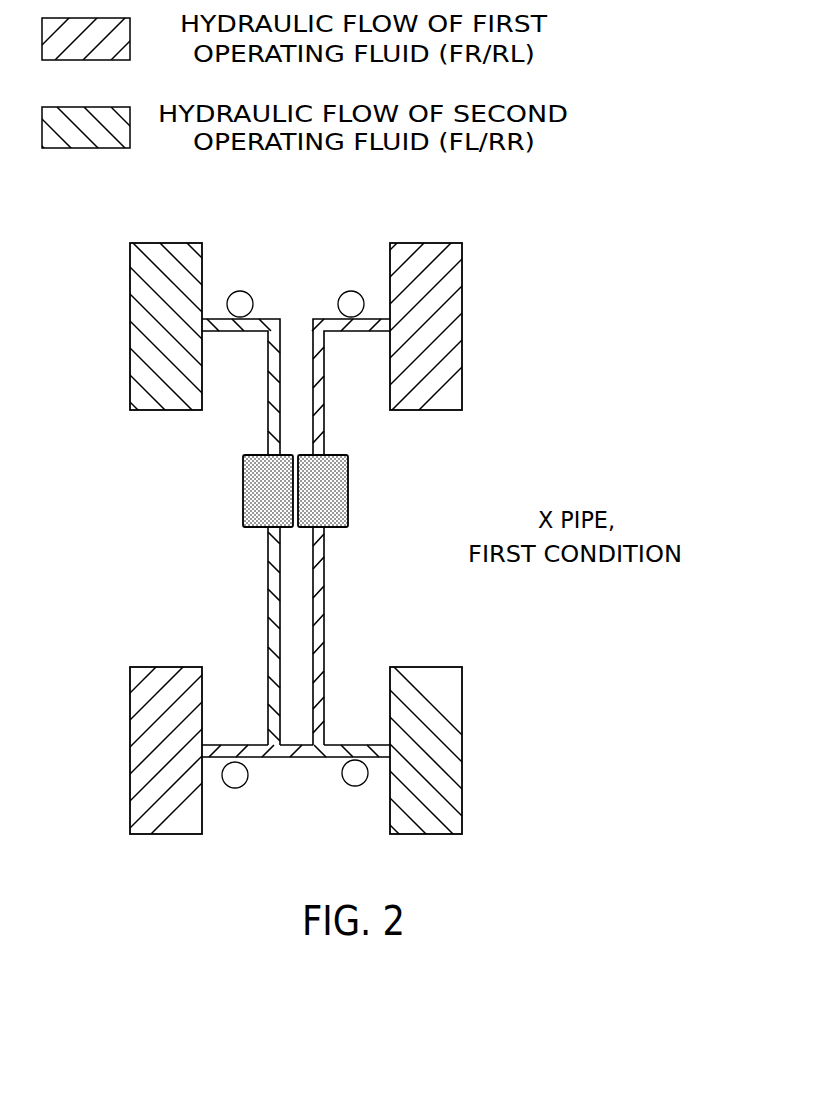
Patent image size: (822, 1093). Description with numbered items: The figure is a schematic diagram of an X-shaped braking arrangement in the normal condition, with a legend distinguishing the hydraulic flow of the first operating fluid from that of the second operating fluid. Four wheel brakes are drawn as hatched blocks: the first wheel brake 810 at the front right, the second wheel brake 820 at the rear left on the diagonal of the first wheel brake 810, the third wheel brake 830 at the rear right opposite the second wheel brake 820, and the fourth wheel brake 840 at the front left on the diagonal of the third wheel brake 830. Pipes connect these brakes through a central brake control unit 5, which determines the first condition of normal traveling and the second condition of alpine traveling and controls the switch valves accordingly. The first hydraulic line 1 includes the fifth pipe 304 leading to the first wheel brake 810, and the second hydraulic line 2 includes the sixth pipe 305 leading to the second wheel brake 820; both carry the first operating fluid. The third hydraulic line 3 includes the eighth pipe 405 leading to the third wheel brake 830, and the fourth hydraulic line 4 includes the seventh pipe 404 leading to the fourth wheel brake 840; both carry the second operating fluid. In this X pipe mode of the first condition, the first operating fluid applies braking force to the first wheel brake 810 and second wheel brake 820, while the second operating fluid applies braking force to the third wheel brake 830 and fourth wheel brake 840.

The brake control unit 5 is at (349, 498).
The fifth pipe 304 is at (355, 332).
The sixth pipe 305 is at (228, 745).
The seventh pipe 404 is at (230, 332).
The eighth pipe 405 is at (352, 745).
The first wheel brake 810 is at (462, 323).
The second wheel brake 820 is at (130, 748).
The third wheel brake 830 is at (462, 745).
The fourth wheel brake 840 is at (130, 321).
The first hydraulic line 1 is at (351, 304).
The second hydraulic line 2 is at (235, 775).
The third hydraulic line 3 is at (355, 773).
The fourth hydraulic line 4 is at (240, 304).